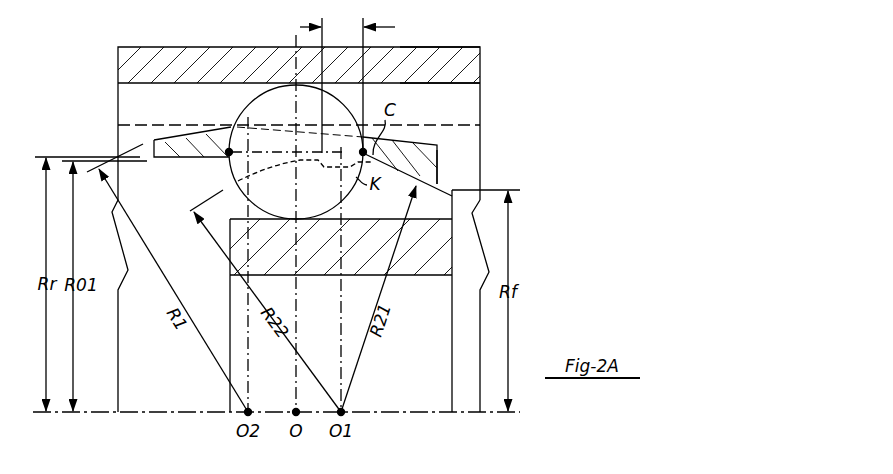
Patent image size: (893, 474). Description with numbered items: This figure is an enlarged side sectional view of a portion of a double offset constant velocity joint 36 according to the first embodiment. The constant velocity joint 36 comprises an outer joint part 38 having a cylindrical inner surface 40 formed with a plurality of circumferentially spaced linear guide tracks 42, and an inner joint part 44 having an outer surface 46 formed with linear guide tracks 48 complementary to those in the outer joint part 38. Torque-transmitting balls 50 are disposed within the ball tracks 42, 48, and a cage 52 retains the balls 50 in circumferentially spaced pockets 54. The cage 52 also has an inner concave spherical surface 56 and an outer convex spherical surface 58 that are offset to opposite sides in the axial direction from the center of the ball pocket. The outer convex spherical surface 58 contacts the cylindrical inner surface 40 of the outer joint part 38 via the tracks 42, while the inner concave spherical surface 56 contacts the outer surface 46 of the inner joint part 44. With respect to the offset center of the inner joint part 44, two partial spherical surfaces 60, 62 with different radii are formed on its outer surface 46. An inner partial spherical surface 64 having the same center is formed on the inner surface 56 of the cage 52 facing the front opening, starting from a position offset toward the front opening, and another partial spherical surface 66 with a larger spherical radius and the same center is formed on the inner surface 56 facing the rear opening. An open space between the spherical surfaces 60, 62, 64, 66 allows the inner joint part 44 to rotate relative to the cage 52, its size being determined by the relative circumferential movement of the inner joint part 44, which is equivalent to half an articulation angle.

The double offset constant velocity joint 36 is at (106, 117).
The outer joint part 38 is at (184, 52).
The cylindrical inner surface 40 is at (462, 96).
The linear guide tracks 42 is at (462, 105).
The inner joint part 44 is at (424, 266).
The outer surface 46 is at (448, 183).
The linear guide tracks 48 is at (443, 208).
The torque-transmitting balls 50 is at (262, 108).
The cage 52 is at (186, 132).
The pockets 54 is at (271, 137).
The inner concave spherical surface 56 is at (192, 162).
The outer convex spherical surface 58 is at (420, 138).
The partial spherical surface 60 is at (438, 162).
The partial spherical surface 62 is at (222, 183).
The inner partial spherical surface 64 is at (398, 172).
The partial spherical surface 66 is at (300, 177).